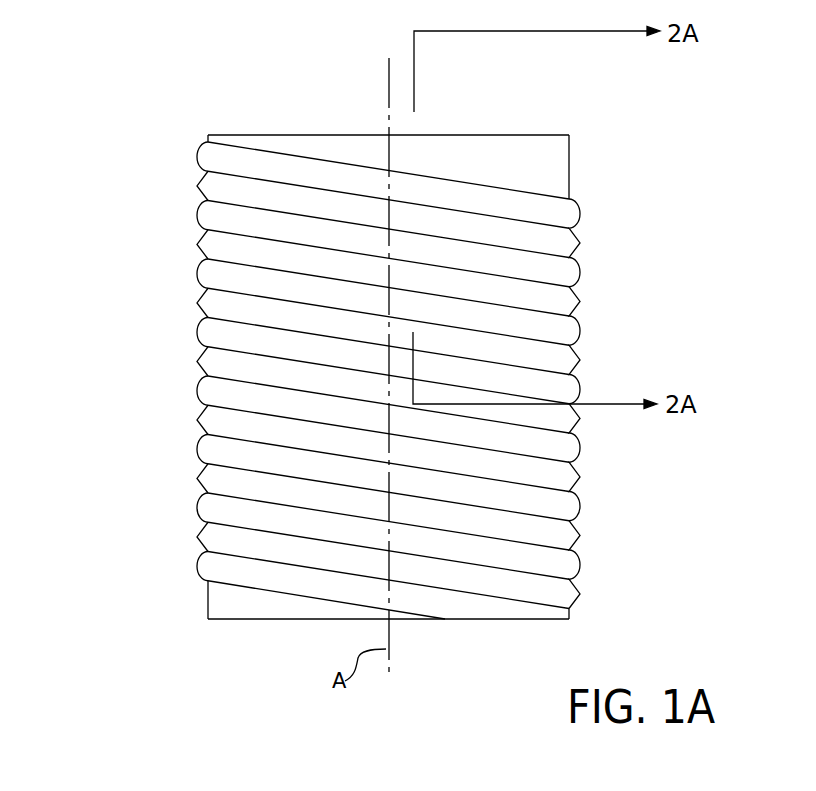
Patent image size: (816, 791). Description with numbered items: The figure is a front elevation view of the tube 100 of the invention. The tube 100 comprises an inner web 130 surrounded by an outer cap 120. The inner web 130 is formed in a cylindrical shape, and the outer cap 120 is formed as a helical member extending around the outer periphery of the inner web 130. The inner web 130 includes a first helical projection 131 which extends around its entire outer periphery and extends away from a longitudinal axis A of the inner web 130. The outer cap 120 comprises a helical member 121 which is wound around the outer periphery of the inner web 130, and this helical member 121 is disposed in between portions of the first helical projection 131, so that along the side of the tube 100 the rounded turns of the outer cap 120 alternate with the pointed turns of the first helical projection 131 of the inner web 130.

The tube 100 is at (224, 108).
The outer cap 120 is at (190, 152).
The inner web 130 is at (188, 188).
The helical member 121 is at (198, 390).
The first helical projection 131 is at (580, 242).